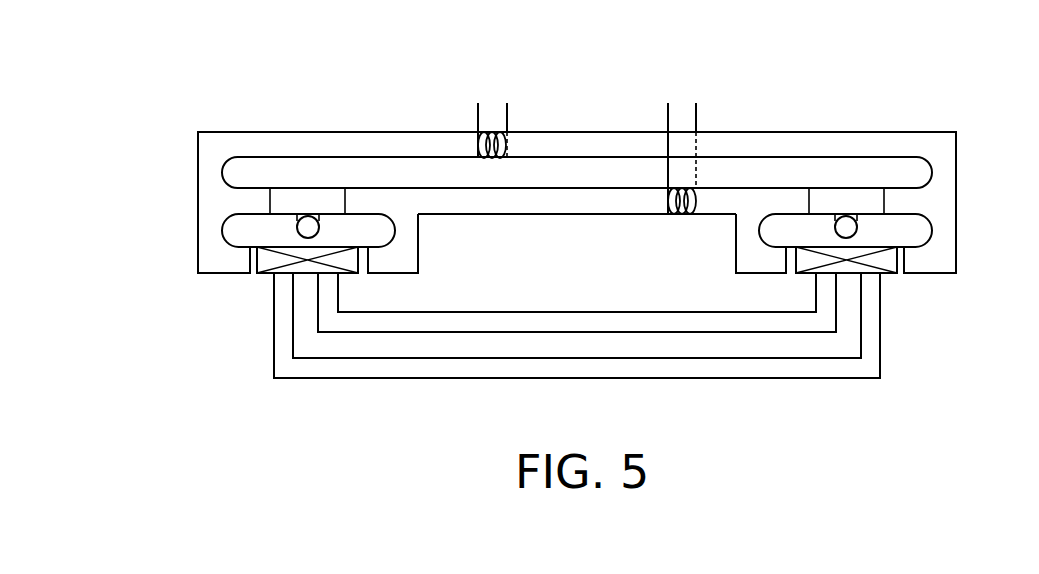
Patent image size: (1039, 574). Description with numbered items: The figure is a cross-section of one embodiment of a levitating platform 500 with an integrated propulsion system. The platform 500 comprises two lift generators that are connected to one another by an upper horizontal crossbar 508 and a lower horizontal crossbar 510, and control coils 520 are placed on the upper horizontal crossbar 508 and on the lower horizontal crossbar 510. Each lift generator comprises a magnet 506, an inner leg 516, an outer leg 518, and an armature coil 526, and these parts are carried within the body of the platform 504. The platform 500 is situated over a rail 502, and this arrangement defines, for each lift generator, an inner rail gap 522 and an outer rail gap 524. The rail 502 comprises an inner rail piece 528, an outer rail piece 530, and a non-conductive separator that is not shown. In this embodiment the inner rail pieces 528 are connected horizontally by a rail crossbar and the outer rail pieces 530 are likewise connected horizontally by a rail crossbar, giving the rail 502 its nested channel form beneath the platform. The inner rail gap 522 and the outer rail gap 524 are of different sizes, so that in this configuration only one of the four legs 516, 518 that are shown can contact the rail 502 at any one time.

The platform 500 is at (127, 58).
The rail 502 is at (274, 331).
The housing 504 is at (198, 142).
The magnet 506 is at (308, 188).
The upper horizontal crossbar 508 is at (370, 130).
The lower horizontal crossbar 510 is at (519, 216).
The inner leg 516 is at (418, 262).
The outer leg 518 is at (198, 258).
The coil leads 520 is at (477, 120).
The inner rail gap 522 is at (792, 267).
The outer rail gap 524 is at (900, 268).
The armature coil 526 is at (857, 233).
The inner rail piece 528 is at (600, 312).
The outer rail piece 530 is at (460, 378).